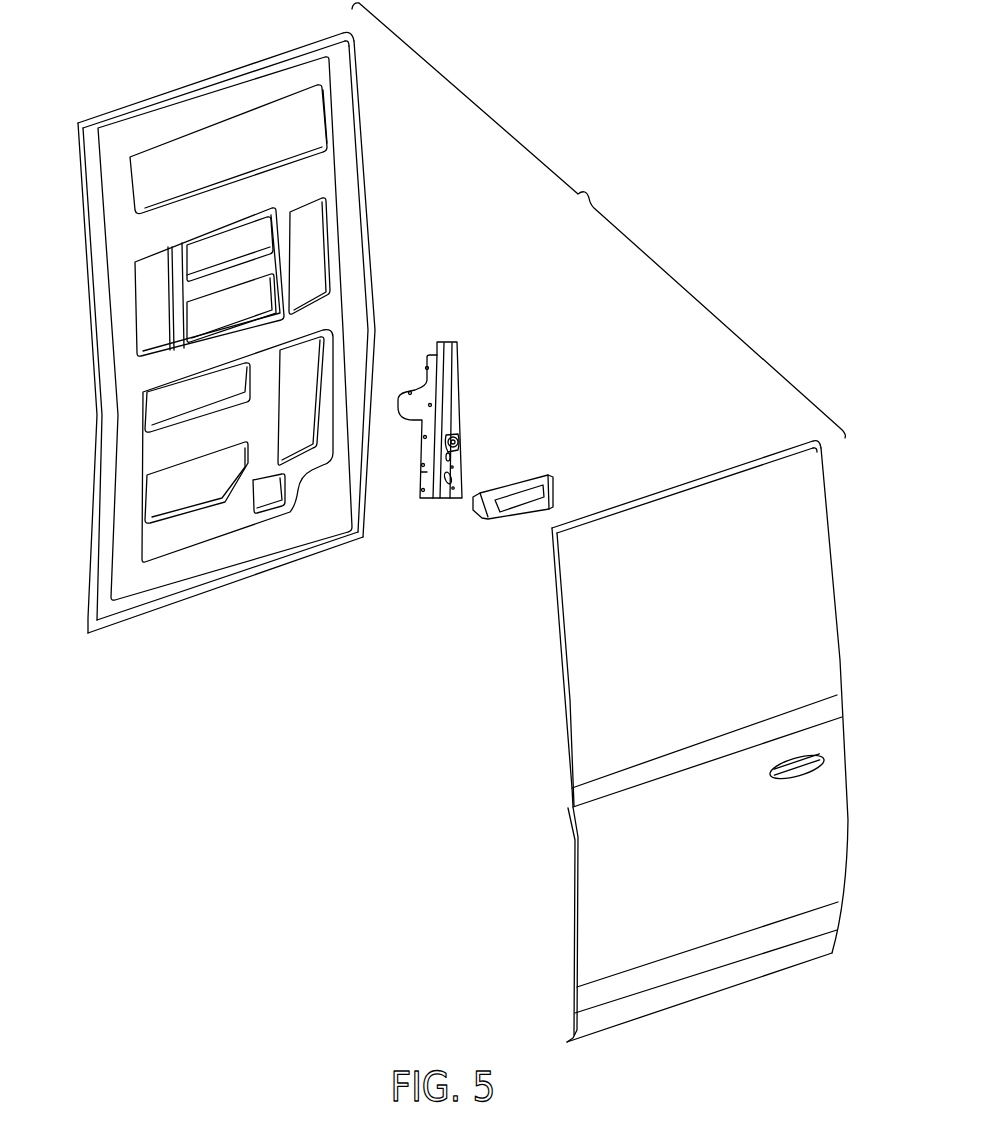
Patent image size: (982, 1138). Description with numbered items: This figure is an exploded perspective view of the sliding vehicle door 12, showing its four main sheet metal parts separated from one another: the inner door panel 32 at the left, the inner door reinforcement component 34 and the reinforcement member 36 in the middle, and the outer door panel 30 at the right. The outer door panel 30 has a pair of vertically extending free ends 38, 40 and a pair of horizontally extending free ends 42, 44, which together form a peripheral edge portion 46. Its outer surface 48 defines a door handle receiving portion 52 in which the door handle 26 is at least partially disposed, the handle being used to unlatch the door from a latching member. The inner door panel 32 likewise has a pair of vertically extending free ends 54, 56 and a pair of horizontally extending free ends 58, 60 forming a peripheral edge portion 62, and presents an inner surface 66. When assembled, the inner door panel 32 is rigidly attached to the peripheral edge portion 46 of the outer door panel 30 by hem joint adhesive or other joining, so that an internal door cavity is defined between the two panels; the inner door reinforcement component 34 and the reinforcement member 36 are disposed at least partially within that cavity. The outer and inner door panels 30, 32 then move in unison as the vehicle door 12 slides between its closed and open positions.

The vehicle door 12 is at (598, 220).
The door handle 26 is at (785, 778).
The outer door panel 30 is at (683, 738).
The inner door panel 32 is at (236, 324).
The inner door reinforcement component 34 is at (472, 388).
The reinforcement member 36 is at (518, 472).
The vertically extending free end 38 is at (837, 605).
The vertically extending free end 40 is at (563, 661).
The horizontally extending free end 42 is at (682, 487).
The horizontally extending free end 44 is at (702, 997).
The peripheral edge portion 46 is at (820, 441).
The outer surface 48 is at (640, 878).
The door handle receiving portion 52 is at (807, 775).
The vertically extending free end 54 is at (364, 246).
The vertically extending free end 56 is at (88, 305).
The horizontally extending free end 58 is at (231, 72).
The horizontally extending free end 60 is at (223, 587).
The peripheral edge portion 62 is at (350, 30).
The inner surface 66 is at (130, 232).